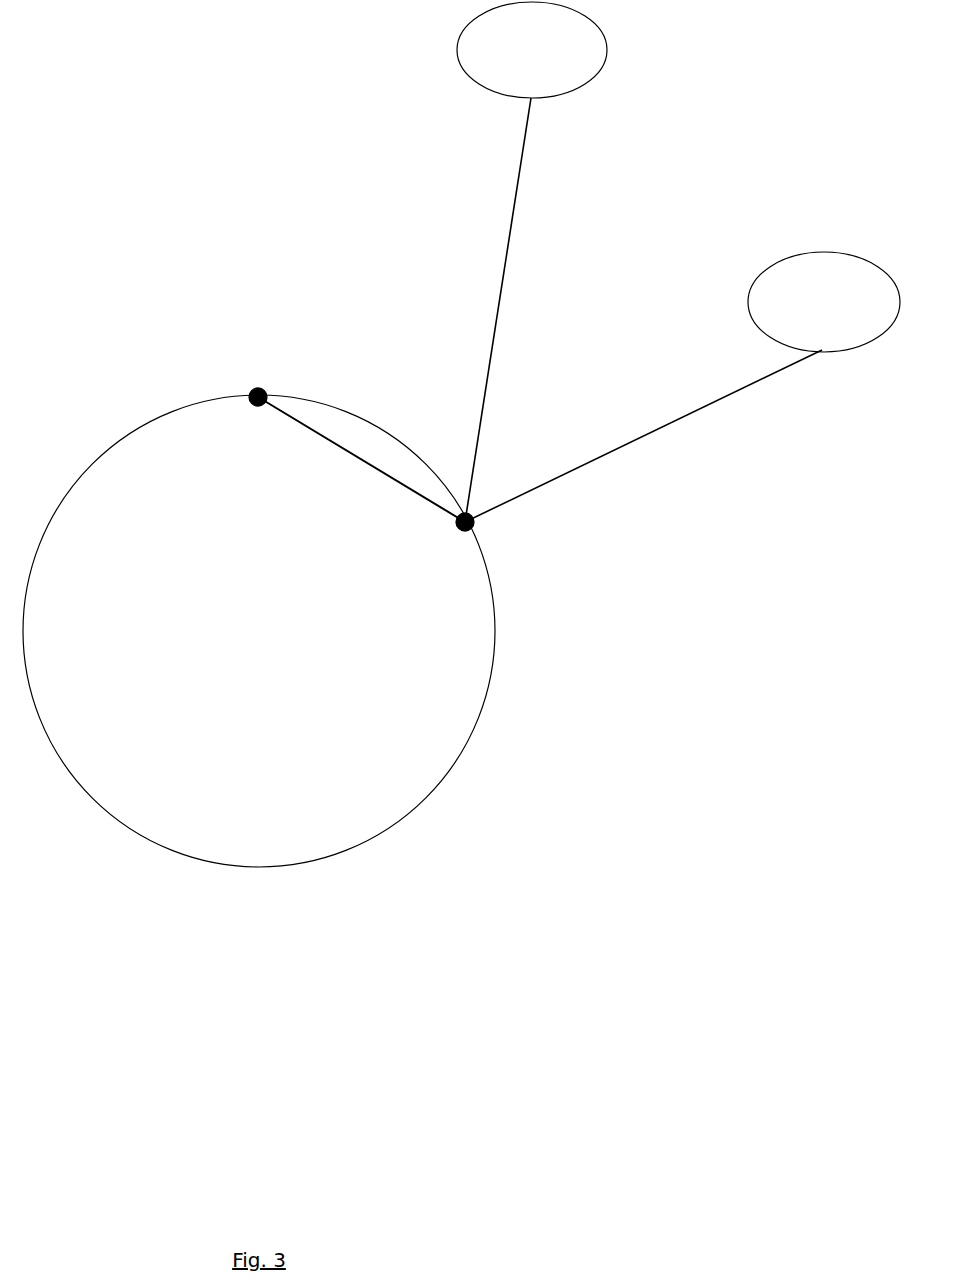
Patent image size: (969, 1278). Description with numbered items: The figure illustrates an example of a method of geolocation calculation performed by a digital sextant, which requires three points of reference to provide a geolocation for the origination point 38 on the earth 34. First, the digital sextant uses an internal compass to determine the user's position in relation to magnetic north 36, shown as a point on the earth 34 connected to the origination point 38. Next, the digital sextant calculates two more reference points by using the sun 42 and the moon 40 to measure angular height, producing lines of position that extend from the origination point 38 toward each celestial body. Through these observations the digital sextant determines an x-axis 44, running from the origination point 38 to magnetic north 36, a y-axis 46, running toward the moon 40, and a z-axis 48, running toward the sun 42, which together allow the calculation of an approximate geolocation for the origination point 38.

The Earth 34 is at (60, 754).
The magnetic north 36 is at (250, 397).
The origination point 38 is at (456, 520).
The moon 40 is at (457, 46).
The sun 42 is at (748, 277).
The x-axis 44 is at (345, 452).
The y-axis 46 is at (503, 262).
The z-axis 48 is at (690, 413).